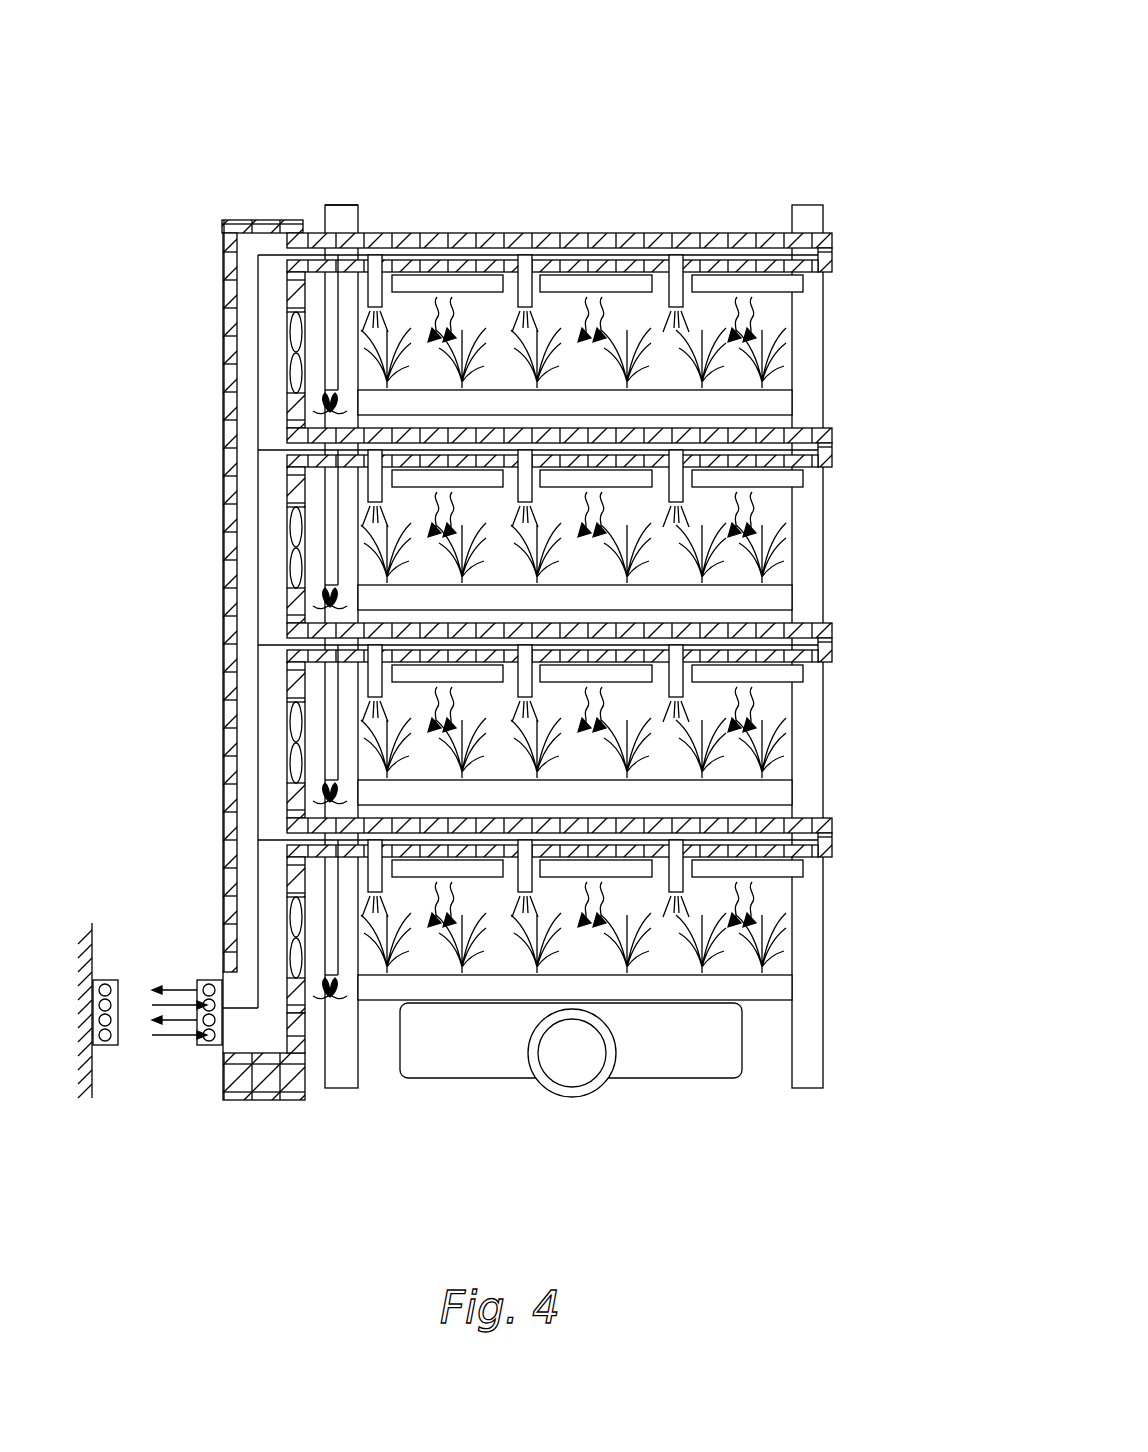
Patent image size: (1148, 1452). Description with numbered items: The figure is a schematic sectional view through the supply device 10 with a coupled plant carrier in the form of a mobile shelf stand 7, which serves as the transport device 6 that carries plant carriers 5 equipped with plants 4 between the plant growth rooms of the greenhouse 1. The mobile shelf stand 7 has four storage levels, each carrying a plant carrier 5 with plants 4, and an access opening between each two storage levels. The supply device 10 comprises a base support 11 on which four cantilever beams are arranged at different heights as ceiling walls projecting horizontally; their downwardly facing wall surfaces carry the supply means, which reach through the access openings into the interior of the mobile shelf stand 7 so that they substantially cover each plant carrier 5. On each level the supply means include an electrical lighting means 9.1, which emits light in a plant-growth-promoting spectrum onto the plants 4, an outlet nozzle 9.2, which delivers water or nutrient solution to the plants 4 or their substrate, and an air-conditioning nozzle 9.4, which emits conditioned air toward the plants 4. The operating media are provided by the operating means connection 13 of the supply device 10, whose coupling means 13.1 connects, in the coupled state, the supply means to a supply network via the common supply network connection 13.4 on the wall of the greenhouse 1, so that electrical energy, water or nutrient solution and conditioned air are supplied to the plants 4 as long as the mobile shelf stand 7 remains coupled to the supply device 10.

The greenhouse 1 is at (95, 1100).
The plants 4 is at (770, 353).
The plant carrier 5 is at (768, 397).
The transport device 6 is at (433, 1078).
The mobile shelf stand 7 is at (805, 1090).
The electrical lighting means 9.1 is at (455, 285).
The outlet nozzle 9.2 is at (372, 278).
The air-conditioning nozzle 9.4 is at (292, 352).
The supply device 10 is at (283, 142).
The base support 11 is at (222, 221).
The operating means connection 13 is at (212, 1046).
The coupling means 13.1 is at (212, 979).
The common supply network connection 13.4 is at (105, 978).